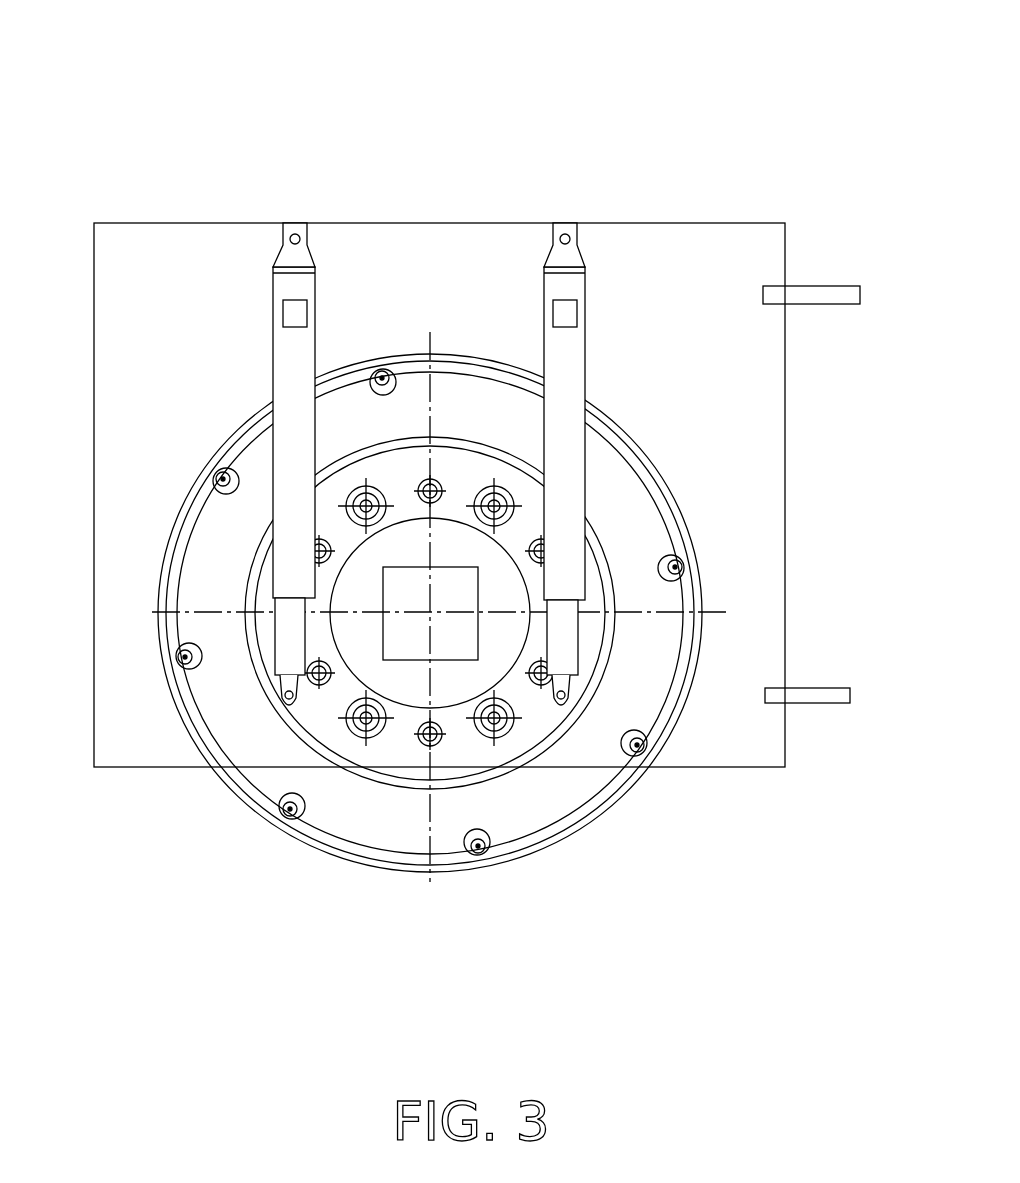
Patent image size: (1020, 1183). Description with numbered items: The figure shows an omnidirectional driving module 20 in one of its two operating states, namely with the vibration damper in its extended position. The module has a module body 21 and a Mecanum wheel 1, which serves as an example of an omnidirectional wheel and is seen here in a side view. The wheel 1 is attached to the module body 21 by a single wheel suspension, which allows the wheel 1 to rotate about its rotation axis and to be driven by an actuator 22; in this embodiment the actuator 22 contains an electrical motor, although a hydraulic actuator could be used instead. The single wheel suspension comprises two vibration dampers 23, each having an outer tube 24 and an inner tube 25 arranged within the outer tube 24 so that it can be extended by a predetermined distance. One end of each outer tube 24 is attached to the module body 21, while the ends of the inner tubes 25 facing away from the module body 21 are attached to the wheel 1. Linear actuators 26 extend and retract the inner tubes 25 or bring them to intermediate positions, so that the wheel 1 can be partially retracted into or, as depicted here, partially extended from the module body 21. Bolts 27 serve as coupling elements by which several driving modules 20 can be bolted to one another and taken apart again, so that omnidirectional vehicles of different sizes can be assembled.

The Mecanum wheel 1 is at (382, 833).
The omnidirectional driving module 20 is at (296, 150).
The module body 21 is at (728, 752).
The actuator 22 is at (457, 640).
The vibration damper 23 is at (556, 280).
The outer tube 24 is at (585, 404).
The inner tube 25 is at (287, 660).
The linear actuator 26 is at (293, 313).
The bolt 27 is at (822, 292).